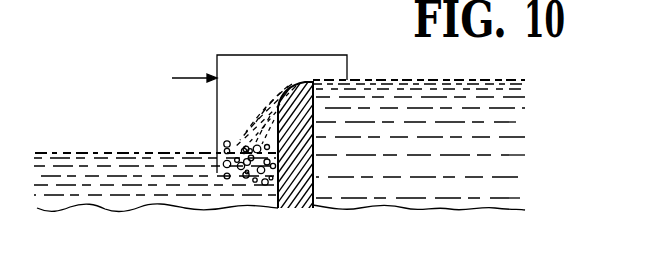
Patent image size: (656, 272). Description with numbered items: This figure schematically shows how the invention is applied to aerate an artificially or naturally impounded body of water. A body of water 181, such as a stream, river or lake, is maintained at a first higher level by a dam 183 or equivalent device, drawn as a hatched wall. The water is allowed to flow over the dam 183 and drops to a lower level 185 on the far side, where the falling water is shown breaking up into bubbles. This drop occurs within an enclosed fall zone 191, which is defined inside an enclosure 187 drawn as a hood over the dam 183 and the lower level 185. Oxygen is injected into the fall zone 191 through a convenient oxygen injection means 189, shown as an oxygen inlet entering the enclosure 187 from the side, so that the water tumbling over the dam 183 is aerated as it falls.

The body of water 181 is at (487, 108).
The dam 183 is at (290, 207).
The lower level 185 is at (217, 142).
The enclosure 187 is at (317, 55).
The oxygen injection means 189 is at (189, 68).
The fall zone 191 is at (252, 68).